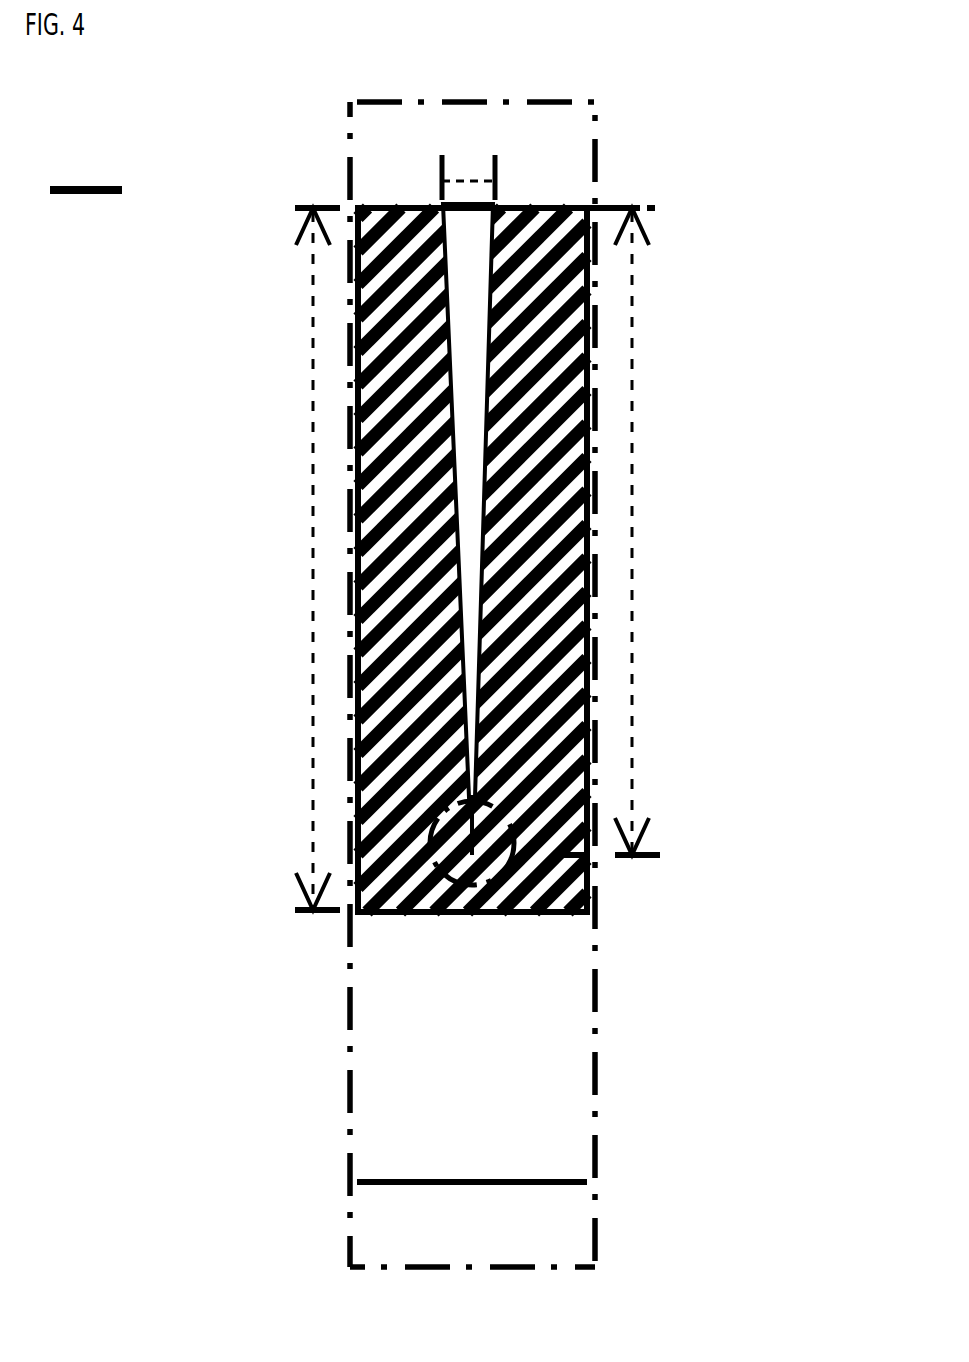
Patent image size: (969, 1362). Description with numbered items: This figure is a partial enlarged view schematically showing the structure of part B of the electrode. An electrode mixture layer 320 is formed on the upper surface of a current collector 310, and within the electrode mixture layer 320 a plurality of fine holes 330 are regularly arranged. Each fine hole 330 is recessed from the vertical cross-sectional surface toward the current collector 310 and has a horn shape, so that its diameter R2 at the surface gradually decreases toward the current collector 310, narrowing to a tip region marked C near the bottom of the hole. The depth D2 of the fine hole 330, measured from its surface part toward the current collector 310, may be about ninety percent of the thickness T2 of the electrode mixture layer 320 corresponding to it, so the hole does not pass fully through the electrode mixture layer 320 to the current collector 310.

The current collector 310 is at (538, 1045).
The electrode mixture layer 320 is at (377, 208).
The fine hole 330 is at (475, 263).
The groove bottom region C is at (460, 882).
The diameter R2 is at (468, 181).
The thickness T2 is at (282, 559).
The depth D2 is at (642, 531).
The part B is at (86, 140).